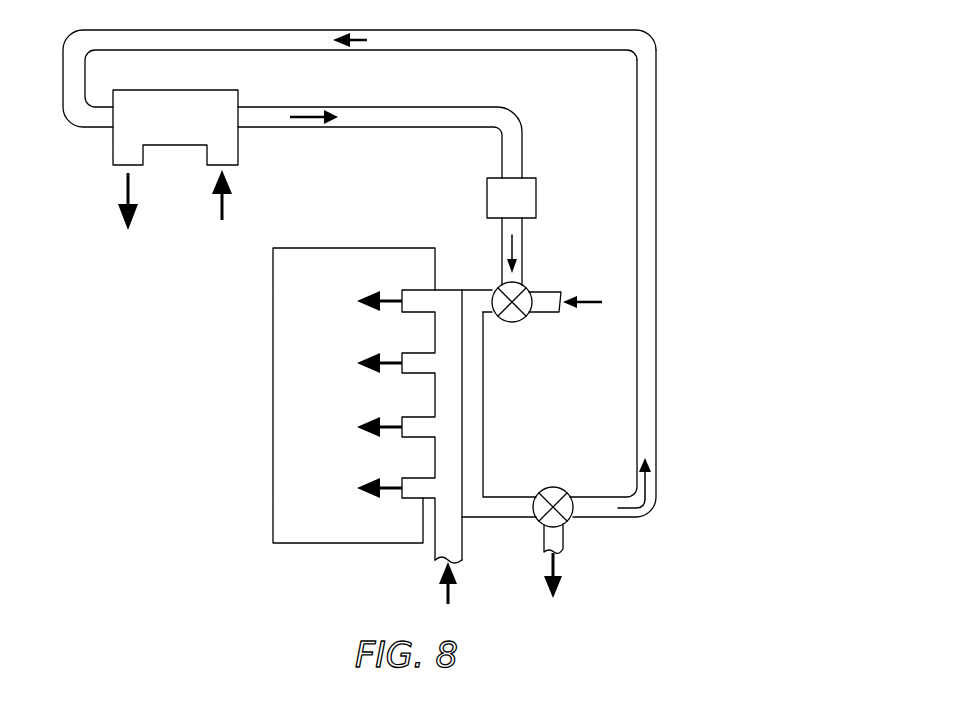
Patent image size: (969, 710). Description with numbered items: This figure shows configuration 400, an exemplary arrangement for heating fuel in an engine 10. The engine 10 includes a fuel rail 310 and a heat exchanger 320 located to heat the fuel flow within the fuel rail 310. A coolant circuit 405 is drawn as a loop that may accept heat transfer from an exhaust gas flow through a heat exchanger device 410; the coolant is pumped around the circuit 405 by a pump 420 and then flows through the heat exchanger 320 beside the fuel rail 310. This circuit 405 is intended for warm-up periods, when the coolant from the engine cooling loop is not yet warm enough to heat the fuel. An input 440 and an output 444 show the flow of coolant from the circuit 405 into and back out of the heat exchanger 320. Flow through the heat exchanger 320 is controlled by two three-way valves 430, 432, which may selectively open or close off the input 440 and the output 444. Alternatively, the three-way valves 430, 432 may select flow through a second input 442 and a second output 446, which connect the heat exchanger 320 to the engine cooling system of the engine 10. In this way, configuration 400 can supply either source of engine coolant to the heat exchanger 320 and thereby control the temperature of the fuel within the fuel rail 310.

The engine 10 is at (341, 246).
The fuel rail 310 is at (450, 287).
The heat exchanger 320 is at (489, 414).
The configuration 400 is at (678, 91).
The circuit 405 is at (658, 210).
The heat exchanger device 410 is at (210, 107).
The pump 420 is at (495, 200).
The three-way valve 430 is at (572, 524).
The three-way valve 432 is at (525, 283).
The input 440 is at (525, 257).
The input 442 is at (548, 315).
The output 444 is at (659, 480).
The output 446 is at (567, 542).